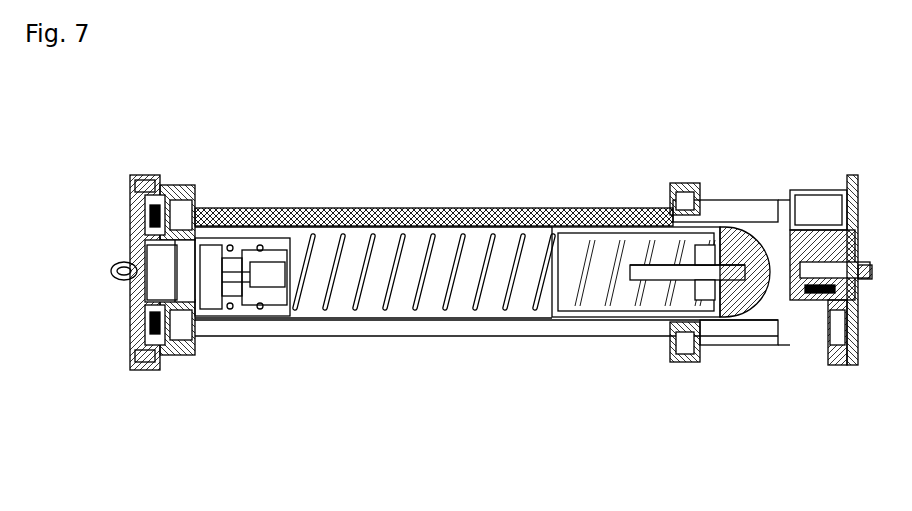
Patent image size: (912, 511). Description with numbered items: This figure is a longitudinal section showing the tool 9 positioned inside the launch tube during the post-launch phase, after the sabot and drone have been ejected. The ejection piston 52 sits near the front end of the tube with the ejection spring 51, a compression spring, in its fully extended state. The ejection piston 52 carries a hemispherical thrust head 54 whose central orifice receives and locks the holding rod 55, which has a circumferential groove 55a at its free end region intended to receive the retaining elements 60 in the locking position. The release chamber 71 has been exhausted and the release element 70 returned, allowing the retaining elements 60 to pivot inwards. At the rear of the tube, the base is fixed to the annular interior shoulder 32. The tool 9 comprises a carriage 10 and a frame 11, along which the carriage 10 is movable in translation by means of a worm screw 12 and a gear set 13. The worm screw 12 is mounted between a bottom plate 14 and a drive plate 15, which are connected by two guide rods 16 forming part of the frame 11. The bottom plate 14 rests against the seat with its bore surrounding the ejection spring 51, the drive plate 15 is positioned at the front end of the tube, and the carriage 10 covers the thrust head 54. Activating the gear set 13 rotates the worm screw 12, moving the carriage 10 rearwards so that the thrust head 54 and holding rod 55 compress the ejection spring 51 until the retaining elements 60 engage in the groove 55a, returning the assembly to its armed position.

The tool 9 is at (407, 186).
The carriage 10 is at (758, 205).
The frame 11 is at (500, 343).
The worm screw 12 is at (330, 210).
The gear set 13 is at (815, 210).
The bottom plate 14 is at (187, 358).
The drive plate 15 is at (845, 362).
The guide rods 16 is at (352, 330).
The interior shoulder 32 is at (131, 238).
The ejection spring 51 is at (424, 292).
The ejection piston 52 is at (633, 318).
The thrust head 54 is at (743, 300).
The holding rod 55 is at (648, 265).
The groove 55a is at (622, 265).
The retaining elements 60 is at (258, 290).
The release element 70 is at (162, 285).
The release chamber 71 is at (150, 258).